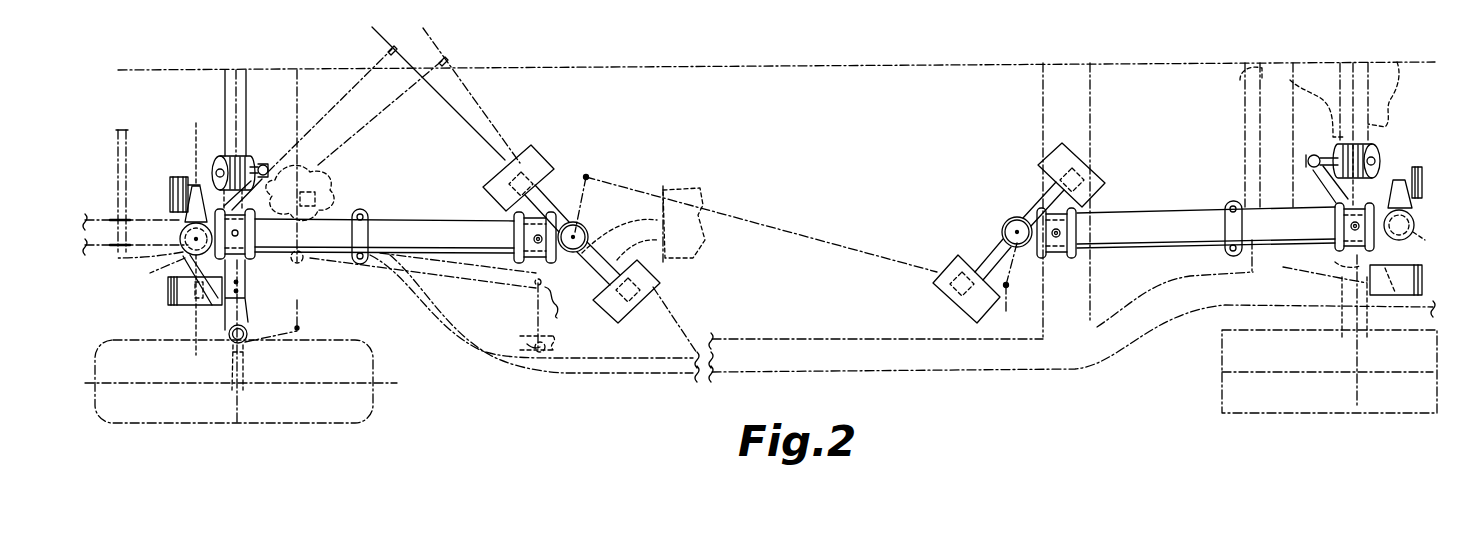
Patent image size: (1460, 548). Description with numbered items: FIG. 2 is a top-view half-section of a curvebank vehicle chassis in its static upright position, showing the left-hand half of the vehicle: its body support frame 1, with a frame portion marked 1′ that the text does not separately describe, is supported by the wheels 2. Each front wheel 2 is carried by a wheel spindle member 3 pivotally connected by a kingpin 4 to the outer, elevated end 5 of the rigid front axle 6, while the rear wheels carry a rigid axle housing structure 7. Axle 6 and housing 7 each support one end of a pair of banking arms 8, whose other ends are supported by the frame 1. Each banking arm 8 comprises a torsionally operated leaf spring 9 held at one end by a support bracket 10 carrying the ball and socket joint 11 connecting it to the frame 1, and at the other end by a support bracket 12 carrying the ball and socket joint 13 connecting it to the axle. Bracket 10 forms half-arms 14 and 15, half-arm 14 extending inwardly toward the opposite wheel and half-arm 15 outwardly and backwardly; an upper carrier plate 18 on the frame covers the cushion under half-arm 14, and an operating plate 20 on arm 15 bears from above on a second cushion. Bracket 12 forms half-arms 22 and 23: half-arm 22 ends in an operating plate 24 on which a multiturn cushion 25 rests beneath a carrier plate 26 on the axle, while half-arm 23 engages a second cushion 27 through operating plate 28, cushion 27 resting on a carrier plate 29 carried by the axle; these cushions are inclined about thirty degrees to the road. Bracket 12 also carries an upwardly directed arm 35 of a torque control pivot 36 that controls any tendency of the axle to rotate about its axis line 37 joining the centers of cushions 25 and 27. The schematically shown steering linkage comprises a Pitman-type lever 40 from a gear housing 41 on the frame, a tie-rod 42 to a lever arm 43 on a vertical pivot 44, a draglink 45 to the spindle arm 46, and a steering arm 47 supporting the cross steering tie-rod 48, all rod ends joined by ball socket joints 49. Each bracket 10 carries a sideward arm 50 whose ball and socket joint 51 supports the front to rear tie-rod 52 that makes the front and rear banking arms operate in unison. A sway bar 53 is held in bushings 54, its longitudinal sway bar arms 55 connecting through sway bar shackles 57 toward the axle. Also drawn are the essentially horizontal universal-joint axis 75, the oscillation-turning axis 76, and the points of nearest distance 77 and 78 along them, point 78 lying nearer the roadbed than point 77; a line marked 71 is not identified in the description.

The body support frame 1 is at (725, 339).
The frame member 1′ is at (660, 205).
The wheels 2 is at (315, 410).
The wheel spindle member 3 is at (246, 368).
The kingpin 4 is at (247, 331).
The outer elevated end 5 is at (248, 308).
The rigid front axle 6 is at (247, 104).
The rigid axle housing structure 7 is at (1392, 118).
The banking arms 8 is at (428, 190).
The torsionally operated leaf spring 9 is at (380, 225).
The support bracket 10 is at (566, 212).
The banking arm ball and socket joint 11 is at (585, 226).
The support bracket 12 is at (170, 265).
The banking arm ball and socket joint 13 is at (180, 240).
The support half-arm 14 is at (545, 208).
The support half-arm 15 is at (592, 280).
The upper carrier plate 18 is at (530, 146).
The operating plate 20 is at (662, 280).
The support half-arm 22 is at (170, 292).
The support half-arm 23 is at (185, 215).
The operating plate 24 is at (170, 305).
The multiturn cushion 25 is at (173, 306).
The carrier plate 26 is at (190, 306).
The second multiturn cushion 27 is at (182, 178).
The operating plate 28 is at (203, 185).
The carrier plate 29 is at (170, 180).
The upwardly directed arm 35 is at (268, 160).
The torque control pivot 36 is at (249, 157).
The axis line 37 is at (196, 123).
The horizontally extending lever 40 is at (301, 274).
The gear housing 41 is at (322, 175).
The tie-rod 42 is at (320, 262).
The lever arm 43 is at (537, 310).
The vertically extending pivot 44 is at (525, 345).
The steering draglink 45 is at (358, 282).
The spindle arm 46 is at (240, 286).
The steering arm 47 is at (300, 331).
The cross steering tie-rod 48 is at (299, 100).
The ball socket joints 49 is at (572, 306).
The arm 50 is at (586, 200).
The ball and socket joint 51 is at (590, 175).
The front to rear tie-rod 52 is at (745, 220).
The sway bar 53 is at (125, 130).
The bushings 54 is at (115, 205).
The sway bar arms 55 is at (143, 267).
The sway bar shackles 57 is at (207, 308).
The reference line 71 is at (655, 320).
The axis 75 is at (450, 115).
The oscillation-turning axis 76 is at (485, 102).
The point of nearest distance 77 is at (393, 47).
The point of nearest distance 78 is at (447, 60).